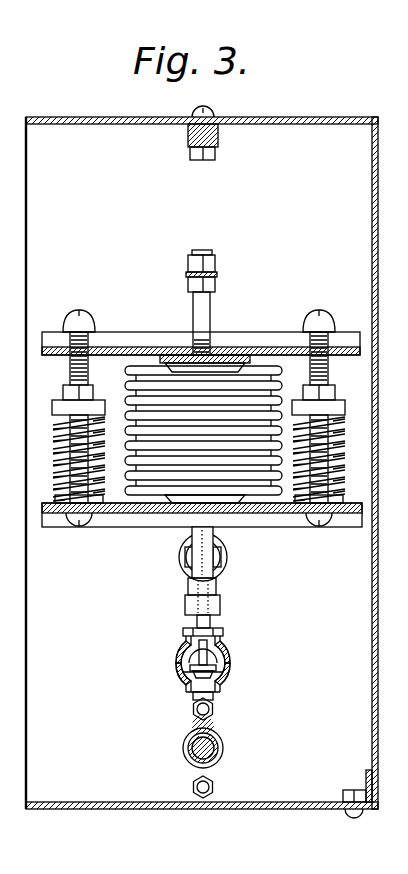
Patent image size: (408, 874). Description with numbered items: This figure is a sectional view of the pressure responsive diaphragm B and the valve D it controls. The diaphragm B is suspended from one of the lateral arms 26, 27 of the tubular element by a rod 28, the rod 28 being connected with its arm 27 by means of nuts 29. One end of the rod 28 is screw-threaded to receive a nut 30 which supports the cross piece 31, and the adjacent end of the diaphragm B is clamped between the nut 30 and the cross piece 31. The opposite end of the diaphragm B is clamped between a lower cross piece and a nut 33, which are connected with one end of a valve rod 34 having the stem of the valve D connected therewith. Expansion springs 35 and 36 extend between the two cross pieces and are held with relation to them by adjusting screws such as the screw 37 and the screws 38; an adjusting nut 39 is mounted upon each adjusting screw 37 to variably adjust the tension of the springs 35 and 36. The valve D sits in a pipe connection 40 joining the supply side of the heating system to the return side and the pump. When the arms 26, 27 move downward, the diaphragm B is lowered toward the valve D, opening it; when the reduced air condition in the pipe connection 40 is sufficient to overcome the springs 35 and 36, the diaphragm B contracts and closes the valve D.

The lateral arm 26 is at (217, 462).
The lateral arm 27 is at (217, 275).
The rod 28 is at (211, 312).
The nut 29 is at (189, 283).
The nut 30 is at (226, 353).
The cross piece 31 is at (173, 346).
The nut 33 is at (238, 505).
The valve rod 34 is at (191, 528).
The expansion spring 35 is at (65, 490).
The expansion spring 36 is at (337, 472).
The adjusting screw 37 is at (320, 318).
The screw 38 is at (323, 523).
The adjusting nut 39 is at (336, 400).
The pipe connection 40 is at (189, 662).
The diaphragm B is at (134, 382).
The valve D is at (195, 689).